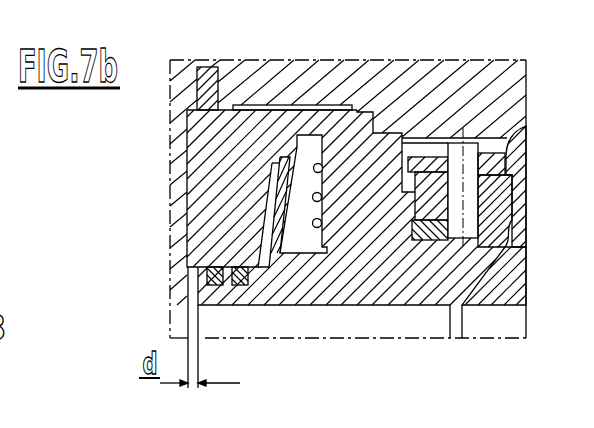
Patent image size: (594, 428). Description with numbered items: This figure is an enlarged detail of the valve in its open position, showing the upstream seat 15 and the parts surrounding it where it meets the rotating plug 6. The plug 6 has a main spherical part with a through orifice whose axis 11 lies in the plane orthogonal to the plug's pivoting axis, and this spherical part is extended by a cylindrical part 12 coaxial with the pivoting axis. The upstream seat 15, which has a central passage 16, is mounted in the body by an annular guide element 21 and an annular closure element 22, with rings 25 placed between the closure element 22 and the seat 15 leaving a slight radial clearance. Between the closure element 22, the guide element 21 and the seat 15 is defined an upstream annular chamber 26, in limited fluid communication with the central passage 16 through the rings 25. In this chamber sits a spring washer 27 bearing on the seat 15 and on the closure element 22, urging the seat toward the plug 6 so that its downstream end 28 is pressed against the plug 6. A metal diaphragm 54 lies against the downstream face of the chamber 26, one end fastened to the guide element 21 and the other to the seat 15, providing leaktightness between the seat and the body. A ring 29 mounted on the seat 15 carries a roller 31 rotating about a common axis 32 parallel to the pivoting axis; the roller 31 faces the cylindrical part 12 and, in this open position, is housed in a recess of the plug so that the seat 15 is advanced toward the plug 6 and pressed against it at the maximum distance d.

The rotating plug 6 is at (506, 287).
The axis of the through orifice 11 is at (528, 332).
The cylindrical part 12 is at (518, 200).
The upstream seat 15 is at (378, 277).
The central passage 16 is at (457, 318).
The annular guide element 21 is at (352, 135).
The annular closure element 22 is at (226, 128).
The rings 25 is at (206, 280).
The upstream annular chamber 26 is at (298, 220).
The spring washer 27 is at (276, 178).
The downstream end of the upstream seat 28 is at (505, 263).
The ring 29 is at (430, 157).
The roller 31 is at (507, 152).
The common axis 32 is at (466, 172).
The metal diaphragm 54 is at (306, 133).